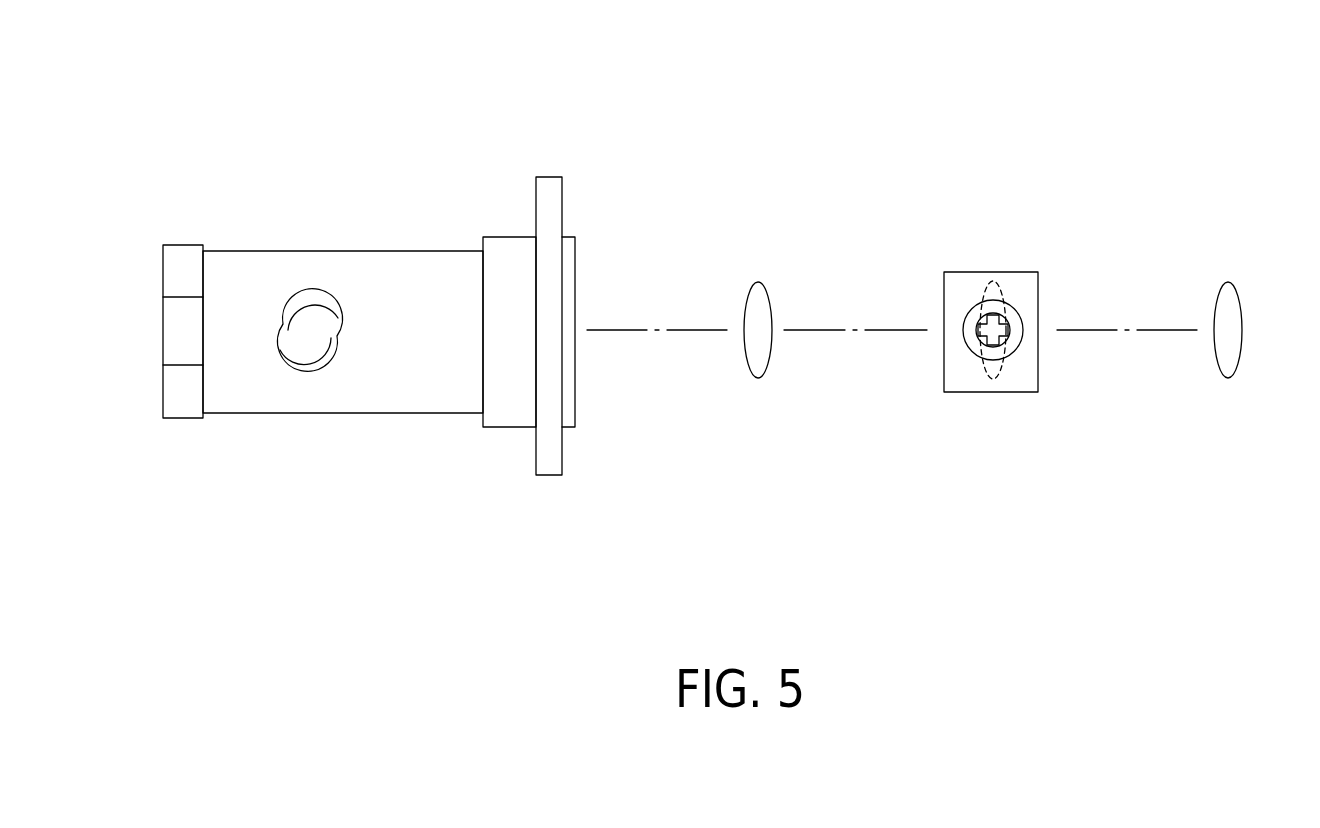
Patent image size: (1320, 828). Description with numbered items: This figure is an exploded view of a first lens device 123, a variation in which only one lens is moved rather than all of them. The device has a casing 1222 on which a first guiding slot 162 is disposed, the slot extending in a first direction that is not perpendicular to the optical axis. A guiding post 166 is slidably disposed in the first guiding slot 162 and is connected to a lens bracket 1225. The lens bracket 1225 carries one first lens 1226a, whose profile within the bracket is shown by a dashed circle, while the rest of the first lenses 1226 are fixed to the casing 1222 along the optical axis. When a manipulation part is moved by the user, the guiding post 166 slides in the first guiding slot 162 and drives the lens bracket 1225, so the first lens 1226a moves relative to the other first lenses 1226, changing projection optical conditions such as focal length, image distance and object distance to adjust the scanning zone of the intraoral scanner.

The first lens device 123 is at (142, 83).
The first guiding slot 162 is at (311, 310).
The casing 1222 is at (391, 275).
The lens bracket 1225 is at (968, 282).
The guiding post 166 is at (1013, 318).
The first lenses 1226 is at (758, 375).
The first lens 1226a is at (998, 372).